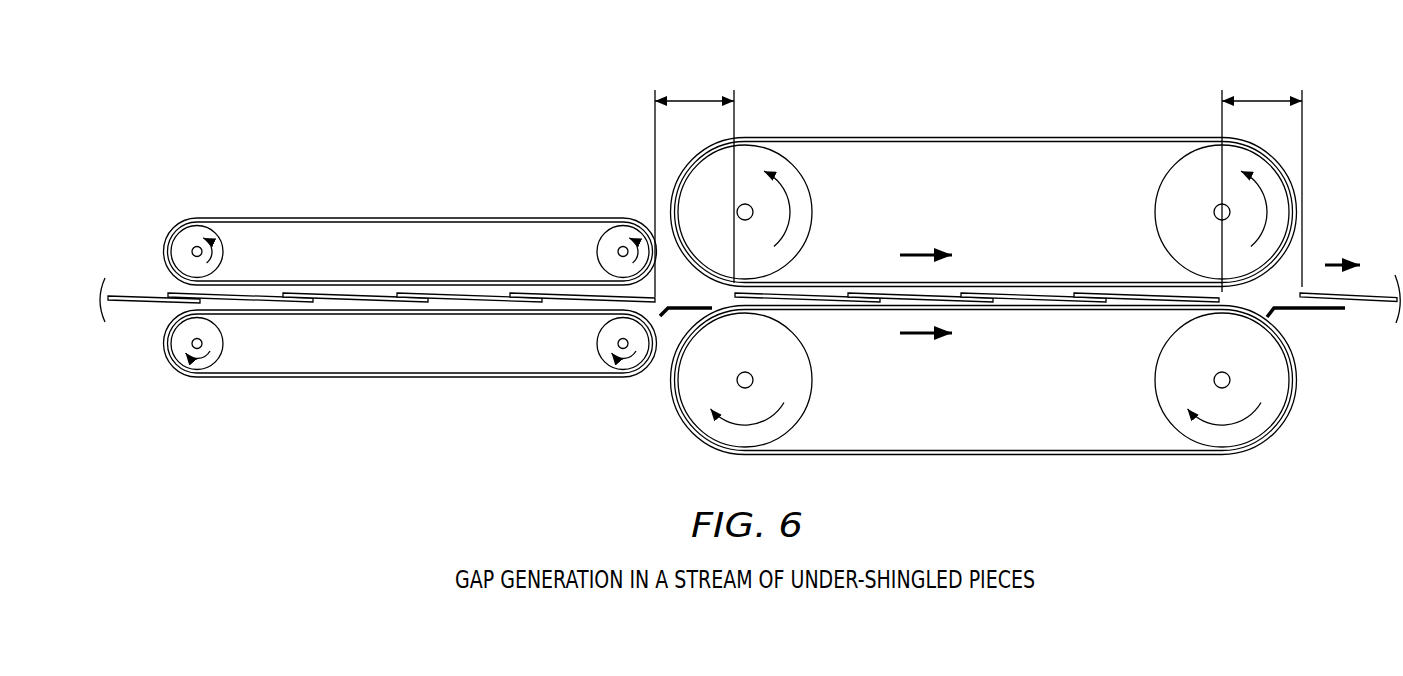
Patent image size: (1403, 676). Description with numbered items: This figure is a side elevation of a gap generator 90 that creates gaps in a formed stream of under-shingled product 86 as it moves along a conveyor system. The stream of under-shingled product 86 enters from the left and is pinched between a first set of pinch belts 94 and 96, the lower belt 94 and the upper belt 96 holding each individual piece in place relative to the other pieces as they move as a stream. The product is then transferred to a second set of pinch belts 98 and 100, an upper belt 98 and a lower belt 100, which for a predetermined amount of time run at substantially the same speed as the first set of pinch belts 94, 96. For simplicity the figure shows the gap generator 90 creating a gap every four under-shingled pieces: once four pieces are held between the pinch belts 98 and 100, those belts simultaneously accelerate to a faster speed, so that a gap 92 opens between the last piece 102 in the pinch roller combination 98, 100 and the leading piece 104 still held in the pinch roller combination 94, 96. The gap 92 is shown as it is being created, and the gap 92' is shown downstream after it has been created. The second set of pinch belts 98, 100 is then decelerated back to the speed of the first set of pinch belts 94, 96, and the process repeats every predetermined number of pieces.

The stream of under-shingled product 86 is at (147, 288).
The gap generator 90 is at (432, 100).
The gap 92 is at (694, 170).
The gap 92' is at (1262, 168).
The pinch belt 94 is at (355, 380).
The pinch belt 96 is at (340, 218).
The pinch belt 98 is at (1070, 137).
The pinch belt 100 is at (985, 454).
The last piece 102 is at (827, 295).
The leading piece 104 is at (575, 295).